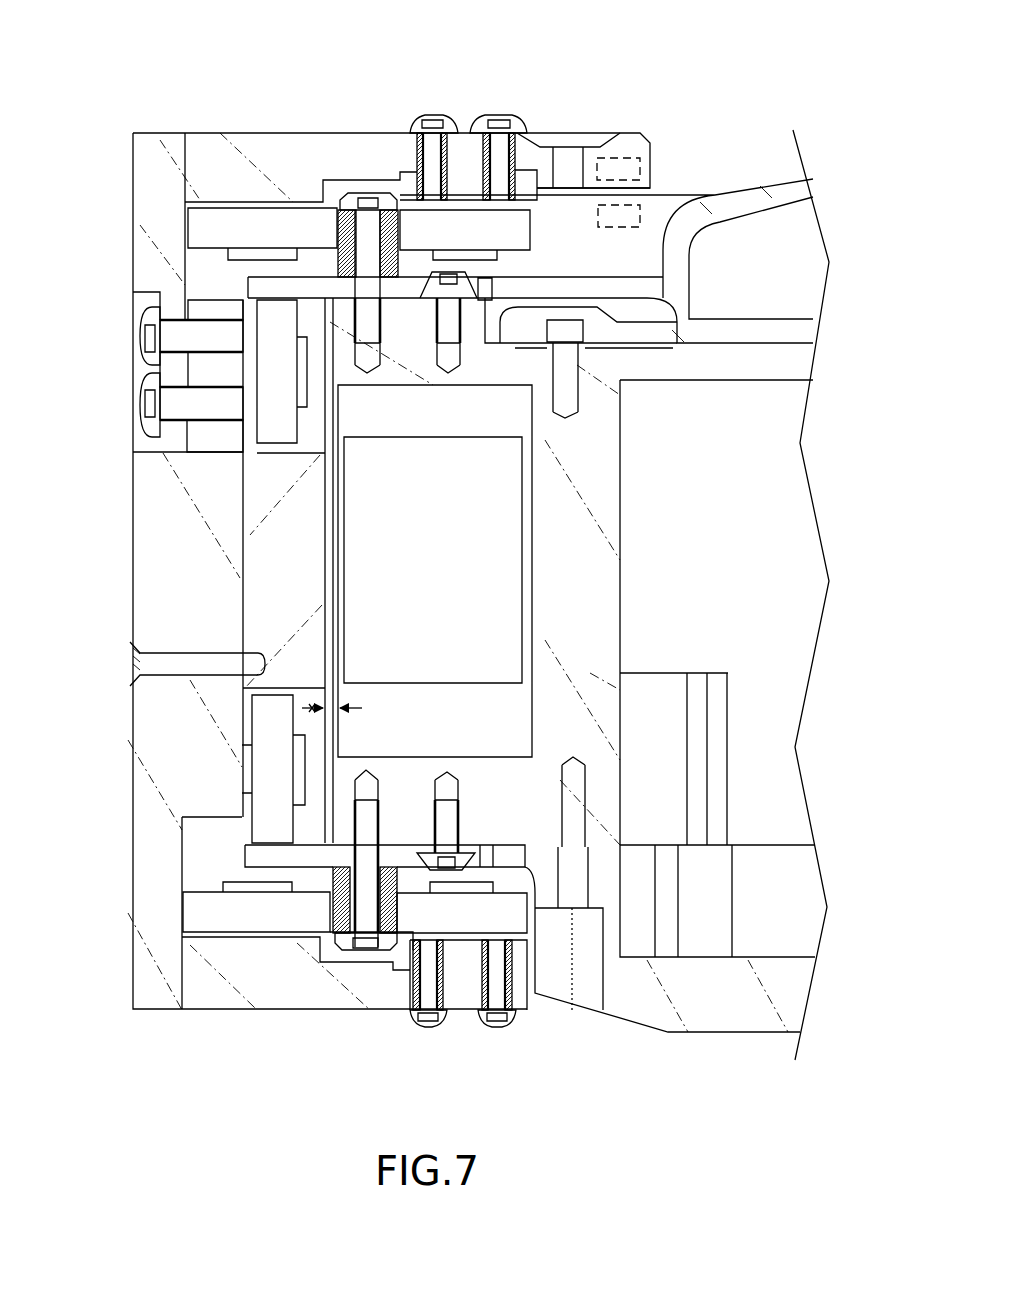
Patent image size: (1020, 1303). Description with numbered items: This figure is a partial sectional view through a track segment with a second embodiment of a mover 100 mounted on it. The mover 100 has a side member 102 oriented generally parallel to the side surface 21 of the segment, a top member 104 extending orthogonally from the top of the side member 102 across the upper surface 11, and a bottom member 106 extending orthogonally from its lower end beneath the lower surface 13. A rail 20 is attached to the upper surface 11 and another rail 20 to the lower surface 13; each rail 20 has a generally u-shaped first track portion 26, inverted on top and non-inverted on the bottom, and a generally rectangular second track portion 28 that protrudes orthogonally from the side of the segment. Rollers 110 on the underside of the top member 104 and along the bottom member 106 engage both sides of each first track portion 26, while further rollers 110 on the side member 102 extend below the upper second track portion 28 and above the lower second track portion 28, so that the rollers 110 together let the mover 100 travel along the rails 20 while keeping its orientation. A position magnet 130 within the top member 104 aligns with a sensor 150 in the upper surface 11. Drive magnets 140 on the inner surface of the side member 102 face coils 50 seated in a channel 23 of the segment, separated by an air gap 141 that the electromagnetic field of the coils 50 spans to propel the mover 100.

The mover 100 is at (138, 130).
The side member 102 is at (170, 572).
The top member 104 is at (268, 140).
The bottom member 106 is at (267, 990).
The rollers 110 is at (232, 218).
The position magnet 130 is at (646, 155).
The drive magnet 140 is at (268, 596).
The air gap 141 is at (355, 715).
The sensor 150 is at (597, 207).
The upper surface 11 is at (610, 278).
The lower surface 13 is at (507, 858).
The rail 20 is at (343, 184).
The side surface 21 is at (330, 817).
The channel 23 is at (532, 720).
The first track portion 26 is at (378, 205).
The second track portion 28 is at (247, 283).
The coil 50 is at (424, 546).